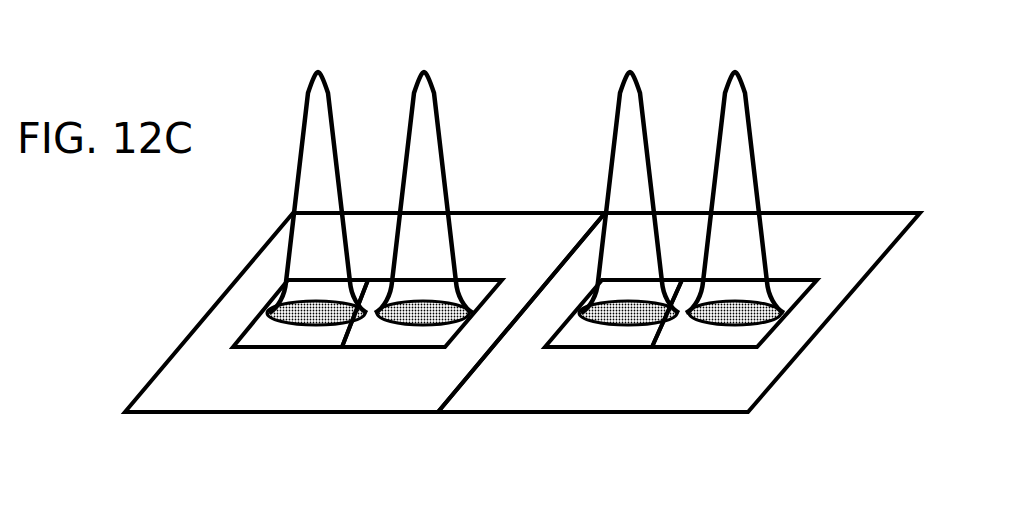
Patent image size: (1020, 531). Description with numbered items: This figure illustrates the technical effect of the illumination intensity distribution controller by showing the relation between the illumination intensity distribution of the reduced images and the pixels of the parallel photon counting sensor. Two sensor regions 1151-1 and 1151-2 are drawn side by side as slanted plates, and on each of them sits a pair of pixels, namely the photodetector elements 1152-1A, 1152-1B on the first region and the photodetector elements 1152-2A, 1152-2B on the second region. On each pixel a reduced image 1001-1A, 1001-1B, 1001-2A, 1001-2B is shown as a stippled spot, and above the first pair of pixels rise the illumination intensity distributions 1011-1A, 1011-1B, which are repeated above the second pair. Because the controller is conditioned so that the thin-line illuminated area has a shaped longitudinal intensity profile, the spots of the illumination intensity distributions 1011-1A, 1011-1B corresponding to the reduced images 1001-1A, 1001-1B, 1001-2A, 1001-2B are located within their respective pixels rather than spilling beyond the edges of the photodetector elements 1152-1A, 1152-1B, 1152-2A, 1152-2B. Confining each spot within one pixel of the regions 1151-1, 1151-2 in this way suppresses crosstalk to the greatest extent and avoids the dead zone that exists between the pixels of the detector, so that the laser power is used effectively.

The first substrate 1151-1 is at (152, 407).
The second substrate 1151-2 is at (502, 407).
The photodetector element 1152-1A is at (250, 338).
The photodetector element 1152-1B is at (379, 338).
The photodetector element 1152-2A is at (560, 338).
The photodetector element 1152-2B is at (695, 338).
The reduced image 1001-1A is at (312, 316).
The reduced image 1001-1B is at (422, 316).
The reduced image 1001-2A is at (625, 316).
The reduced image 1001-2B is at (734, 316).
The illumination intensity distribution 1011-1A is at (305, 117).
The illumination intensity distribution 1011-1B is at (413, 118).